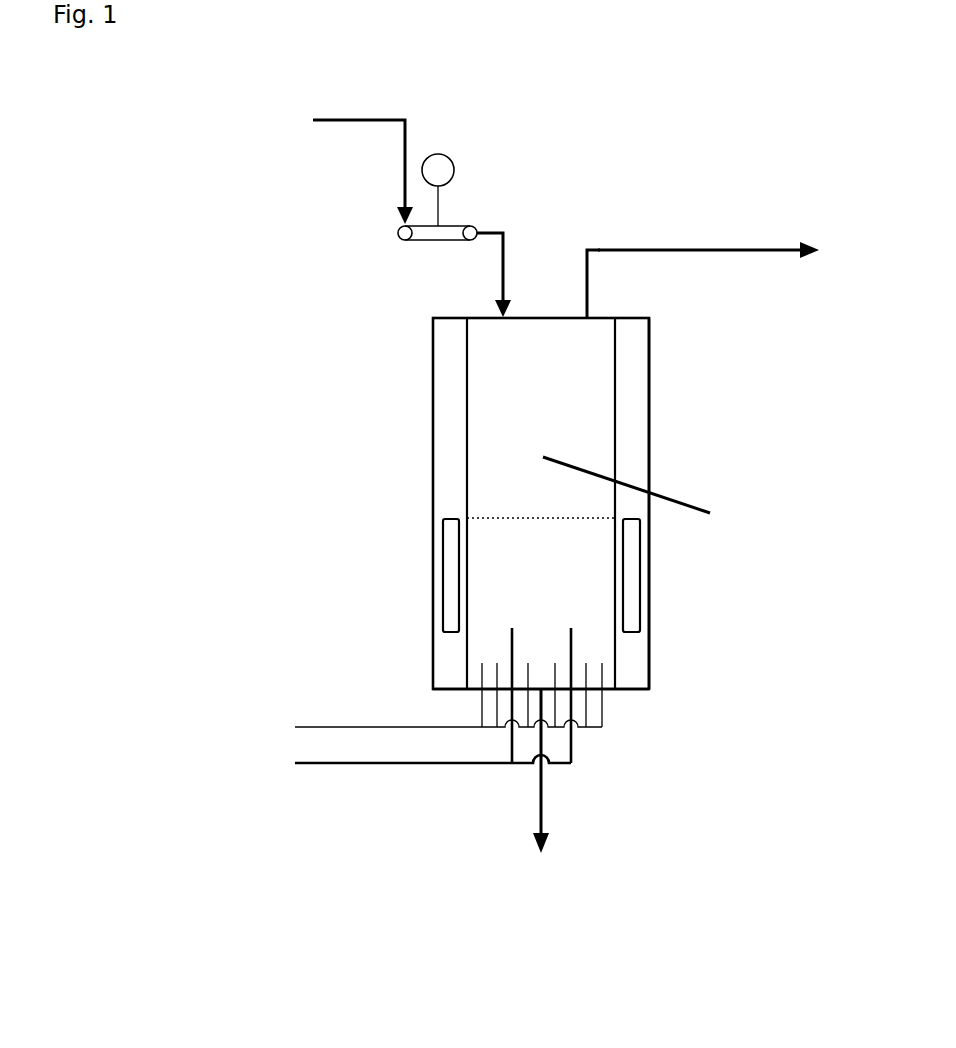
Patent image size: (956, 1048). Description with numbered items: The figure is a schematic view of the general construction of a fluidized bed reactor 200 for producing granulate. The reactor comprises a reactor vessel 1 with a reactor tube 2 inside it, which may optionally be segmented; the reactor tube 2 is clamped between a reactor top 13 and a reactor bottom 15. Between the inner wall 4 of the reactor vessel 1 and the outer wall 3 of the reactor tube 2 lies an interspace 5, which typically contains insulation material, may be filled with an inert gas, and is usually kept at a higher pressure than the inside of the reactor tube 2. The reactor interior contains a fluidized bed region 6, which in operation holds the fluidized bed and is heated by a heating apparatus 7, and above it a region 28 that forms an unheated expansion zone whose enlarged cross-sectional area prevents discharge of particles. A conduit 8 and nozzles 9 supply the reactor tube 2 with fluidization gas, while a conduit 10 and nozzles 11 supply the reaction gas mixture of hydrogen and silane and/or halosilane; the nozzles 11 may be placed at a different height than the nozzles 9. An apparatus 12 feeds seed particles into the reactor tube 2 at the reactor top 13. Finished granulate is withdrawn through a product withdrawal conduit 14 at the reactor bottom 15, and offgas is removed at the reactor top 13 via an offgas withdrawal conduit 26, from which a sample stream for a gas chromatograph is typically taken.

The fluidized bed reactor 200 is at (549, 190).
The reactor vessel 1 is at (432, 345).
The reactor tube 2 is at (466, 385).
The outer wall 3 is at (617, 448).
The inner wall 4 is at (645, 393).
The interspace 5 is at (452, 417).
The fluidized bed region 6 is at (540, 543).
The heating apparatus 7 is at (641, 615).
The conduit 8 is at (310, 727).
The nozzles 9 is at (482, 668).
The conduit 10 is at (325, 763).
The nozzles 11 is at (510, 637).
The apparatus 12 is at (440, 243).
The reactor top 13 is at (605, 318).
The product withdrawal conduit 14 is at (538, 795).
The reactor bottom 15 is at (475, 689).
The offgas withdrawal conduit 26 is at (710, 250).
The region above the fluidized bed region 28 is at (645, 494).